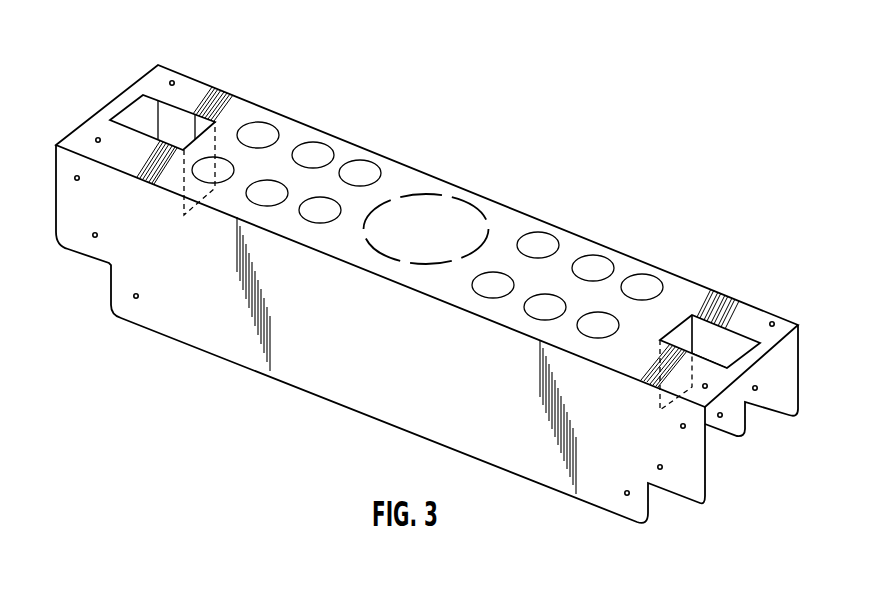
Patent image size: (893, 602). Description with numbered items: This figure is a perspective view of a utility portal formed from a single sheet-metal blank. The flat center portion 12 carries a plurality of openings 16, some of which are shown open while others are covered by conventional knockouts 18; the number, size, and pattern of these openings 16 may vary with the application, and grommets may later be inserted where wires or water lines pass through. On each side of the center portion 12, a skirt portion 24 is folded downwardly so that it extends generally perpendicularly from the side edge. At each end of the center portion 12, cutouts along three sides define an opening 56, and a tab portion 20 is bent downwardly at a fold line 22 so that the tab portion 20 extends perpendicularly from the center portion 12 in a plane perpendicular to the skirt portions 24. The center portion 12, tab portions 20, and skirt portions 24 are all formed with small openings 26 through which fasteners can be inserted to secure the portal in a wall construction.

The center portion 12 is at (513, 217).
The openings 16 is at (319, 210).
The knockouts 18 is at (410, 207).
The tab portions 20 is at (220, 143).
The fold lines 22 is at (197, 120).
The skirt portions 24 is at (323, 366).
The openings 26 is at (171, 81).
The opening 56 is at (717, 347).